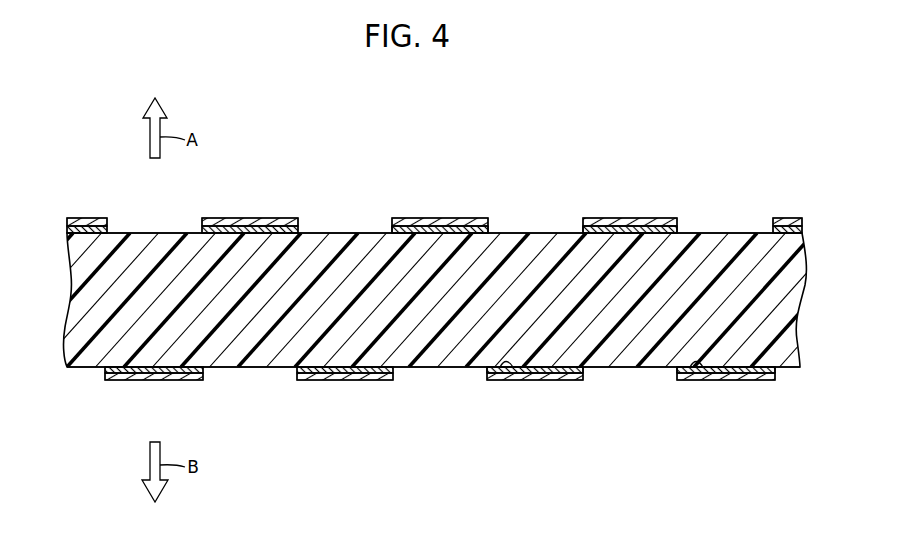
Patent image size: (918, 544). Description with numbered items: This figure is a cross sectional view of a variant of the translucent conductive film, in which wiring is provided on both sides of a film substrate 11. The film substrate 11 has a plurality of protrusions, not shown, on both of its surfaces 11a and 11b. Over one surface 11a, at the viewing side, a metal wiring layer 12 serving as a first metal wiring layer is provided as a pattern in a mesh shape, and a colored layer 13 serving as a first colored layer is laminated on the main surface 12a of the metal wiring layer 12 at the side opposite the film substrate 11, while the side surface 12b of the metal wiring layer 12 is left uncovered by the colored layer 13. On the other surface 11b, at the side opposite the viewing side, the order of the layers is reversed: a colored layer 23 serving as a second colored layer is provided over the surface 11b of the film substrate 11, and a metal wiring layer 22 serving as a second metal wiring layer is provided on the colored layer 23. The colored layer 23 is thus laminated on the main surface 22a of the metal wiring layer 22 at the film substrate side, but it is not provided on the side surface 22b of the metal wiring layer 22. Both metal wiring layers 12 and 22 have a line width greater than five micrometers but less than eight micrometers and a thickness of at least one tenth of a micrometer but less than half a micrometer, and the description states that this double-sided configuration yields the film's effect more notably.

The film substrate 11 is at (795, 292).
The surface of the film substrate 11a is at (181, 233).
The surface of the film substrate 11b is at (252, 367).
The metal wiring layer 12 is at (77, 226).
The main surface of the metal wiring layer 12a is at (412, 226).
The side surface of the metal wiring layer 12b is at (392, 230).
The colored layer 13 is at (92, 218).
The metal wiring layer 22 is at (157, 380).
The main surface of the metal wiring layer 22a is at (497, 378).
The side surface of the metal wiring layer 22b is at (484, 381).
The colored layer 23 is at (112, 380).